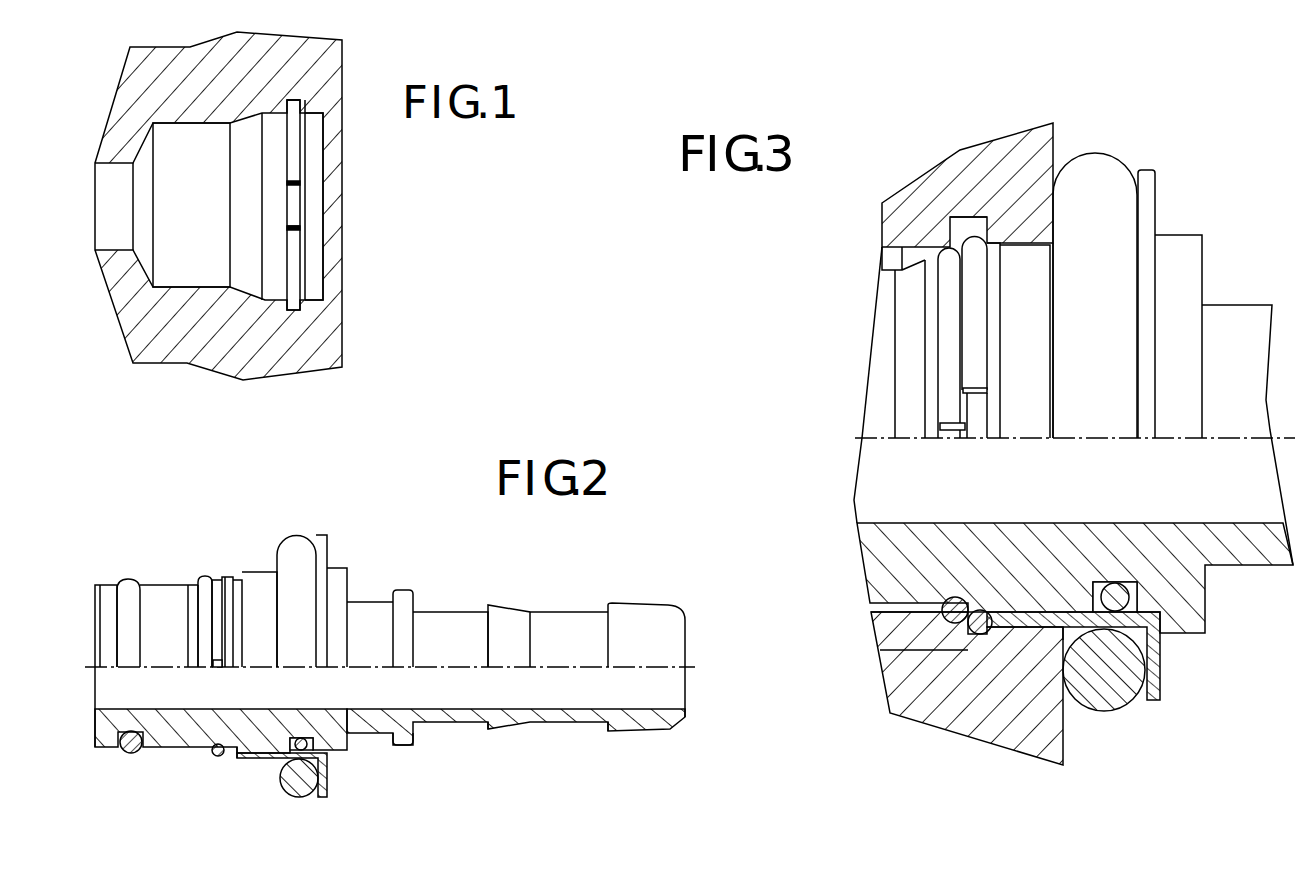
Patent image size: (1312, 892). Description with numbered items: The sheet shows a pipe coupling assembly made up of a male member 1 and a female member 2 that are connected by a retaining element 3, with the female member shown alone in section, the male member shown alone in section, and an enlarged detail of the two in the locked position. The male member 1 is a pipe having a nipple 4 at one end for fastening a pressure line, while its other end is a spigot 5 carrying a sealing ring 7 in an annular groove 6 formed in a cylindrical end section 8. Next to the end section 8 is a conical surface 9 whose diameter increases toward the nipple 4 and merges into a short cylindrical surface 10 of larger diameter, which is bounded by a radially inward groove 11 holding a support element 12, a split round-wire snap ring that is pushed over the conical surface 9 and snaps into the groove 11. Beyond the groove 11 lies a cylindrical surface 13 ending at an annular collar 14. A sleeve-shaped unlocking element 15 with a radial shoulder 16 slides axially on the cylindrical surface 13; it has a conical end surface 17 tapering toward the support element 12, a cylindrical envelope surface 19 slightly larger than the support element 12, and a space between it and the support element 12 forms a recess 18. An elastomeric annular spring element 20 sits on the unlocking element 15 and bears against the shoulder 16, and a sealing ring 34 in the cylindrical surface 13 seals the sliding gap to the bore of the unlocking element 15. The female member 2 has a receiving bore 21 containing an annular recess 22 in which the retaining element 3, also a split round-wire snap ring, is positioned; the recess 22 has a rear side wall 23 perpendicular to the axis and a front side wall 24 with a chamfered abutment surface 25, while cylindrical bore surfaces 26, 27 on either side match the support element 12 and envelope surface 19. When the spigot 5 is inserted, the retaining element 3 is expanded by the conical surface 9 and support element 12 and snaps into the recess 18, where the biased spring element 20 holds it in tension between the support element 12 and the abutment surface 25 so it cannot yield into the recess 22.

In FIG. 2, the male member 1 is at (403, 583).
In FIG. 3, the male member 1 is at (1245, 298).
In FIG. 1, the female member 2 is at (215, 355).
In FIG. 3, the female member 2 is at (895, 215).
In FIG. 1, the retaining element 3 is at (290, 158).
In FIG. 3, the retaining element 3 is at (980, 610).
In FIG. 2, the nipple 4 is at (575, 612).
In FIG. 2, the spigot 5 is at (165, 748).
In FIG. 3, the spigot 5 is at (880, 545).
In FIG. 2, the annular groove 6 is at (98, 735).
In FIG. 2, the sealing ring 7 is at (132, 745).
In FIG. 2, the cylindrical end section 8 is at (100, 585).
In FIG. 2, the conical surface 9 is at (188, 583).
In FIG. 3, the conical surface 9 is at (905, 295).
In FIG. 2, the cylindrical surface 10 is at (203, 578).
In FIG. 3, the cylindrical surface 10 is at (930, 325).
In FIG. 2, the groove 11 is at (218, 665).
In FIG. 3, the groove 11 is at (950, 425).
In FIG. 2, the support element 12 is at (218, 752).
In FIG. 3, the support element 12 is at (955, 597).
In FIG. 2, the cylindrical surface 13 is at (215, 577).
In FIG. 3, the cylindrical surface 13 is at (1065, 590).
In FIG. 2, the annular collar 14 is at (340, 570).
In FIG. 3, the annular collar 14 is at (1185, 245).
In FIG. 2, the unlocking element 15 is at (265, 758).
In FIG. 3, the unlocking element 15 is at (1030, 625).
In FIG. 2, the radial shoulder 16 is at (318, 780).
In FIG. 3, the radial shoulder 16 is at (1147, 172).
In FIG. 2, the conical end surface 17 is at (235, 577).
In FIG. 3, the conical end surface 17 is at (1000, 430).
In FIG. 2, the recess 18 is at (240, 755).
In FIG. 3, the recess 18 is at (965, 390).
In FIG. 2, the cylindrical envelope surface 19 is at (260, 572).
In FIG. 3, the cylindrical envelope surface 19 is at (1025, 352).
In FIG. 2, the spring element 20 is at (300, 520).
In FIG. 3, the spring element 20 is at (1100, 160).
In FIG. 1, the receiving bore 21 is at (168, 275).
In FIG. 3, the receiving bore 21 is at (890, 262).
In FIG. 1, the annular recess 22 is at (290, 220).
In FIG. 3, the annular recess 22 is at (885, 647).
In FIG. 1, the rear side wall 23 is at (288, 100).
In FIG. 3, the rear side wall 23 is at (962, 222).
In FIG. 1, the front side wall 24 is at (298, 100).
In FIG. 3, the front side wall 24 is at (968, 217).
In FIG. 1, the abutment surface 25 is at (305, 270).
In FIG. 3, the abutment surface 25 is at (987, 240).
In FIG. 1, the cylindrical bore surface 26 is at (272, 285).
In FIG. 1, the cylindrical bore surface 27 is at (315, 290).
In FIG. 2, the sealing ring 34 is at (318, 745).
In FIG. 3, the sealing ring 34 is at (1140, 600).